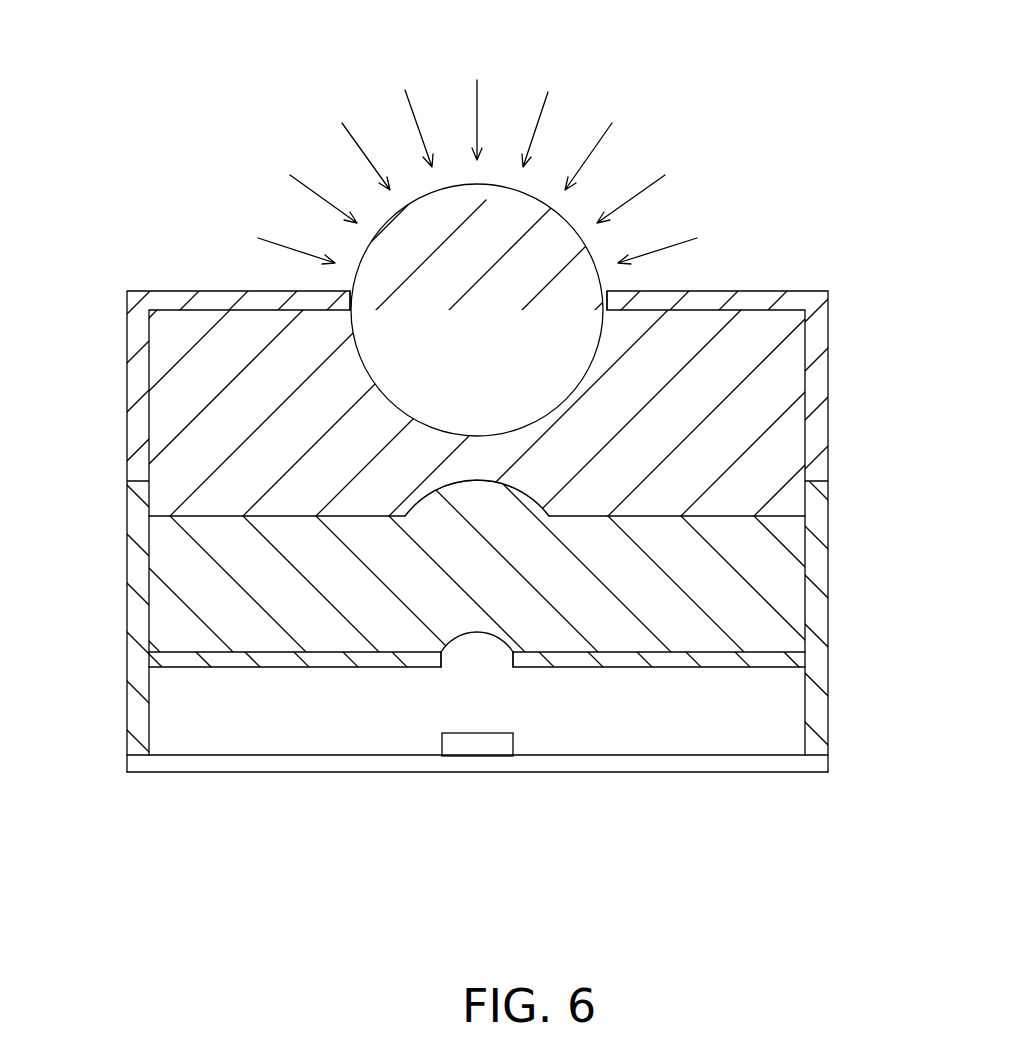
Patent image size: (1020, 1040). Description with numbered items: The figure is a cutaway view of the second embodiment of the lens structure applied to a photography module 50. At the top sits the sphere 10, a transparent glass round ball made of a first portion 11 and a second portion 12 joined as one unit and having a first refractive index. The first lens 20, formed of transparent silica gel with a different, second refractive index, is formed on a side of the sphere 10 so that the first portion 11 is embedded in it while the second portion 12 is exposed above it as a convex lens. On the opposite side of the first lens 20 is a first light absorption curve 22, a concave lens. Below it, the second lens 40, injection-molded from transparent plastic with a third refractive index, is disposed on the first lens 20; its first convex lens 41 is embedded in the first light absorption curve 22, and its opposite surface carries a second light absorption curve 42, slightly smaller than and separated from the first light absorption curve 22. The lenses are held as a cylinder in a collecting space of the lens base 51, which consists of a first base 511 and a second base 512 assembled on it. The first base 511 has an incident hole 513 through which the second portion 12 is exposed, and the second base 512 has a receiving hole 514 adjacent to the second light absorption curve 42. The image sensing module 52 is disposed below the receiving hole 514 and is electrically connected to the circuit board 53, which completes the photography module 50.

The sphere 10 is at (377, 273).
The first portion 11 is at (603, 340).
The second portion 12 is at (593, 253).
The first lens 20 is at (788, 347).
The first light absorption curve 22 is at (420, 498).
The second lens 40 is at (218, 589).
The first convex lens 41 is at (438, 503).
The second light absorption curve 42 is at (477, 635).
The photography module 50 is at (510, 538).
The lens base 51 is at (510, 538).
The first base 511 is at (137, 330).
The second base 512 is at (137, 657).
The incident hole 513 is at (342, 291).
The receiving hole 514 is at (460, 658).
The image sensing module 52 is at (474, 745).
The circuit board 53 is at (702, 758).